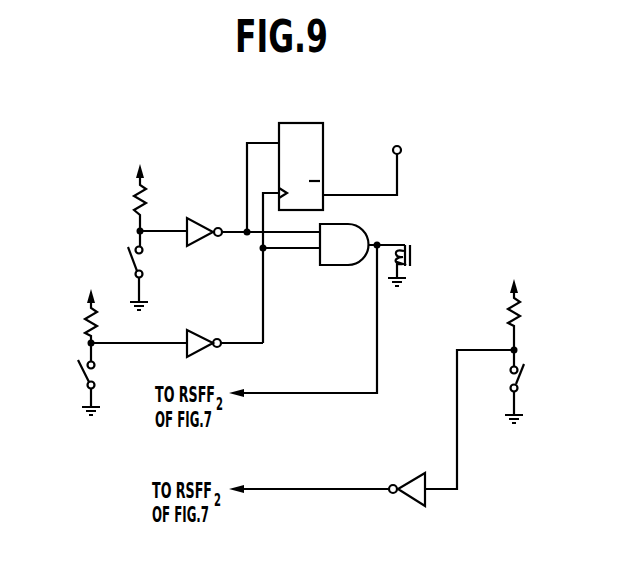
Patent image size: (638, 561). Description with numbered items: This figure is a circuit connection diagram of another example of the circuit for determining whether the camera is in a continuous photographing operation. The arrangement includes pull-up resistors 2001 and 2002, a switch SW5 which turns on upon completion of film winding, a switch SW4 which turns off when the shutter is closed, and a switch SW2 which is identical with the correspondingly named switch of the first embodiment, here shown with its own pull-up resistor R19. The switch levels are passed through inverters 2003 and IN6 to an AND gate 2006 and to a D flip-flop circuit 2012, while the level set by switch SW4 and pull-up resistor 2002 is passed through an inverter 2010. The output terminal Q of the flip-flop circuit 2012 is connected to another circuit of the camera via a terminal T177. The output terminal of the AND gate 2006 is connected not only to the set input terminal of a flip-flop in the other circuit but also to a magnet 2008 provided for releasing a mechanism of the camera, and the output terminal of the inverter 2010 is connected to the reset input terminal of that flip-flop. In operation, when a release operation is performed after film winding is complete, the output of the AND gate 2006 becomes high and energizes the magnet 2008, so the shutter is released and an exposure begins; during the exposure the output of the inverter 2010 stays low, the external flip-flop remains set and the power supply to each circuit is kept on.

The pull-up resistor R19 is at (134, 199).
The switch SW2 is at (126, 257).
The inverter IN6 is at (190, 216).
The D flip-flop circuit 2012 is at (296, 122).
The terminal T177 is at (367, 155).
The AND gate 2006 is at (352, 226).
The magnet 2008 is at (413, 255).
The pull-up resistor 2001 is at (85, 326).
The switch SW5 is at (78, 372).
The inverter 2003 is at (190, 330).
The pull-up resistor 2002 is at (523, 313).
The switch SW4 is at (527, 374).
The inverter 2010 is at (404, 497).